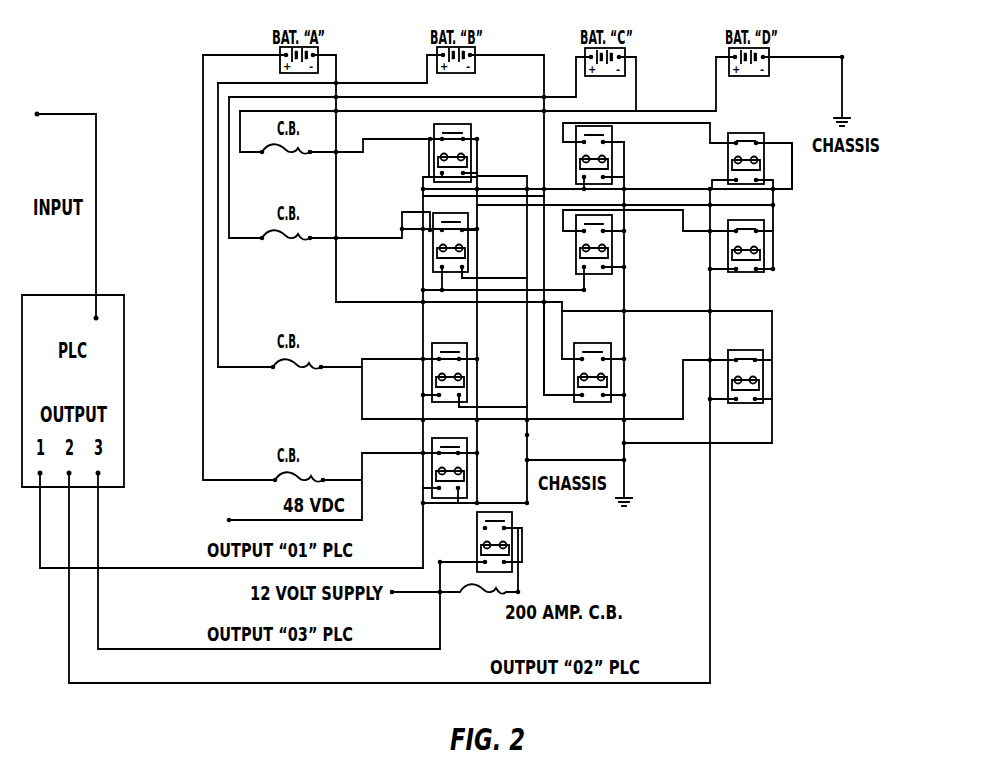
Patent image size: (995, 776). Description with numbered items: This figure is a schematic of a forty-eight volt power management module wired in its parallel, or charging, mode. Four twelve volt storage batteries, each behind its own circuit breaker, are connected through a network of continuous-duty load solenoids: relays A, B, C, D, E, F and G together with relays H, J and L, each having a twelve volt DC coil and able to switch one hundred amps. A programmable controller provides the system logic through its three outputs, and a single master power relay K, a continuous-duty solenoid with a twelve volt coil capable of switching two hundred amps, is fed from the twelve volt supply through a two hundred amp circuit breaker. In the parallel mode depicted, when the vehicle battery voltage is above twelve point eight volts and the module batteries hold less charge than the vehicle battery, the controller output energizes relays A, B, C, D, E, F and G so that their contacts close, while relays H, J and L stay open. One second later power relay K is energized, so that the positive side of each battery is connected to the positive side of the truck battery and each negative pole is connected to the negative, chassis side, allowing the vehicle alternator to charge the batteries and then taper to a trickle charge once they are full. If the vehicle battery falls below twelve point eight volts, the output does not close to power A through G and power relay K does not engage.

The load solenoid relay A is at (430, 470).
The load solenoid relay B is at (445, 361).
The load solenoid relay C is at (433, 251).
The load solenoid relay D is at (437, 153).
The load solenoid relay E is at (593, 356).
The load solenoid relay F is at (585, 244).
The load solenoid relay G is at (585, 157).
The load solenoid relay H is at (741, 361).
The load solenoid relay J is at (741, 246).
The power relay K is at (561, 547).
The load solenoid relay L is at (749, 161).